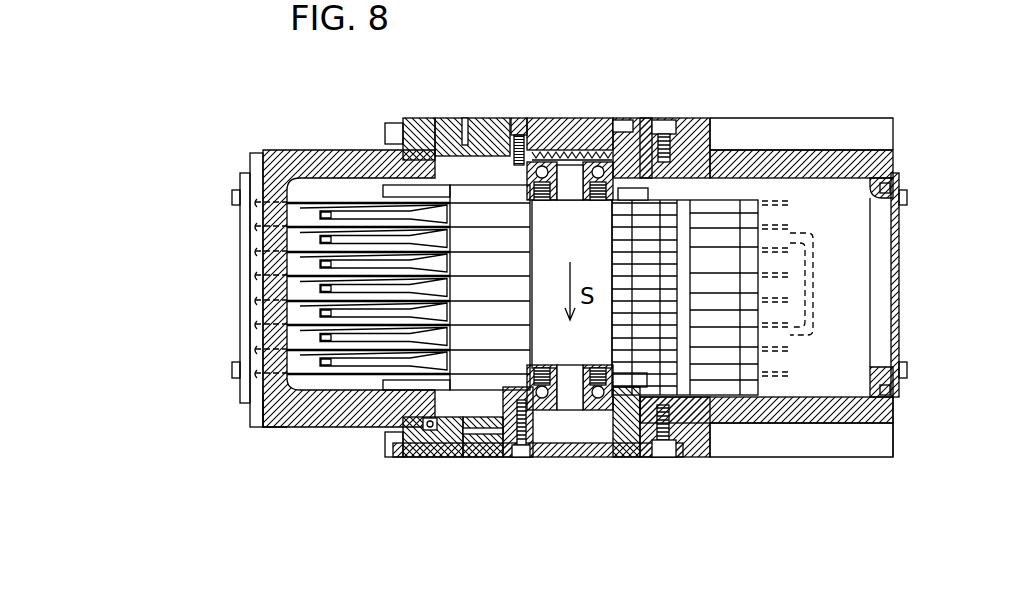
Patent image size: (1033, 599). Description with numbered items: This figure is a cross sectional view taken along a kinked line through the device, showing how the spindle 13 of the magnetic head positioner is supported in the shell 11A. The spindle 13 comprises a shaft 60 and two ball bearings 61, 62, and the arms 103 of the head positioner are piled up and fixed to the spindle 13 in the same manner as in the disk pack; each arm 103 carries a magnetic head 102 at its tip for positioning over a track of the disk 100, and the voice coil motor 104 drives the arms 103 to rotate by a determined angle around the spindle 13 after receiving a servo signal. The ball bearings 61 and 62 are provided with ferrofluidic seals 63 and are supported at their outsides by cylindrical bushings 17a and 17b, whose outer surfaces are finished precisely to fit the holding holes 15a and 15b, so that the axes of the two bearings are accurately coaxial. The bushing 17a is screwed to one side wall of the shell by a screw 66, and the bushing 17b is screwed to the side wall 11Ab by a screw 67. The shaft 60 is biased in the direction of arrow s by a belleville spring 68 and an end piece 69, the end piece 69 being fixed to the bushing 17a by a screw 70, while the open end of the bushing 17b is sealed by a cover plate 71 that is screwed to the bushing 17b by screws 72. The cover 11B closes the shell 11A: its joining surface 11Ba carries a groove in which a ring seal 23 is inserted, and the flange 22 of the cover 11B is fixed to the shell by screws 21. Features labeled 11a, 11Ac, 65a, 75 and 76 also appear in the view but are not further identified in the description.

The shell 11A is at (893, 160).
The housing outer cover 11a is at (780, 150).
The side wall 11Ab is at (797, 425).
The housing end portion 11Ac is at (895, 420).
The cover 11B is at (265, 150).
The joining surface 11Ba is at (262, 410).
The spindle 13 is at (589, 112).
The holding hole 15a is at (645, 118).
The holding hole 15b is at (653, 452).
The cylindrical bushing 17a is at (470, 118).
The cylindrical bushing 17b is at (633, 457).
The screw 21 is at (391, 123).
The flange 22 is at (427, 118).
The ring seal 23 is at (440, 452).
The shaft 60 is at (595, 117).
The ball bearing 61 is at (623, 117).
The ball bearing 62 is at (552, 420).
The ferrofluidic seal 63 is at (628, 229).
The stator end spacer 65a is at (597, 415).
The screw 66 is at (673, 118).
The screw 67 is at (672, 455).
The belleville spring 68 is at (565, 150).
The end piece 69 is at (543, 118).
The screw 70 is at (515, 118).
The cover plate 71 is at (545, 458).
The screw 72 is at (520, 458).
The left end plate 75 is at (240, 309).
The right end plate 76 is at (900, 272).
The disk 100 is at (258, 228).
The magnetic head 102 is at (323, 214).
The arm 103 is at (348, 212).
The voice coil motor 104 is at (797, 307).